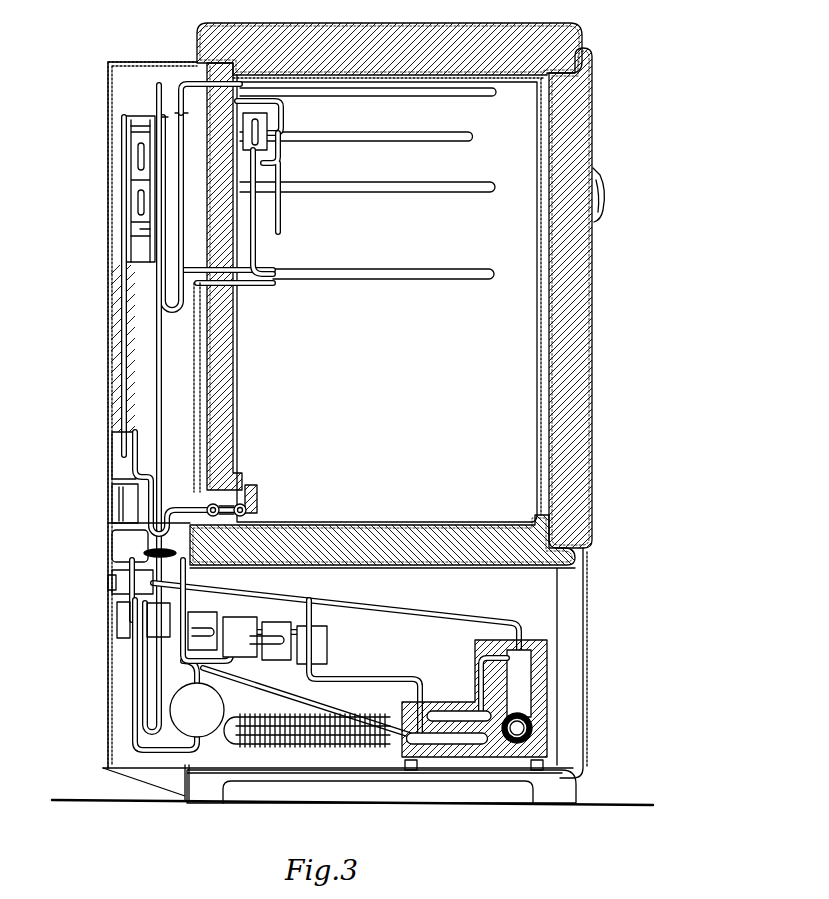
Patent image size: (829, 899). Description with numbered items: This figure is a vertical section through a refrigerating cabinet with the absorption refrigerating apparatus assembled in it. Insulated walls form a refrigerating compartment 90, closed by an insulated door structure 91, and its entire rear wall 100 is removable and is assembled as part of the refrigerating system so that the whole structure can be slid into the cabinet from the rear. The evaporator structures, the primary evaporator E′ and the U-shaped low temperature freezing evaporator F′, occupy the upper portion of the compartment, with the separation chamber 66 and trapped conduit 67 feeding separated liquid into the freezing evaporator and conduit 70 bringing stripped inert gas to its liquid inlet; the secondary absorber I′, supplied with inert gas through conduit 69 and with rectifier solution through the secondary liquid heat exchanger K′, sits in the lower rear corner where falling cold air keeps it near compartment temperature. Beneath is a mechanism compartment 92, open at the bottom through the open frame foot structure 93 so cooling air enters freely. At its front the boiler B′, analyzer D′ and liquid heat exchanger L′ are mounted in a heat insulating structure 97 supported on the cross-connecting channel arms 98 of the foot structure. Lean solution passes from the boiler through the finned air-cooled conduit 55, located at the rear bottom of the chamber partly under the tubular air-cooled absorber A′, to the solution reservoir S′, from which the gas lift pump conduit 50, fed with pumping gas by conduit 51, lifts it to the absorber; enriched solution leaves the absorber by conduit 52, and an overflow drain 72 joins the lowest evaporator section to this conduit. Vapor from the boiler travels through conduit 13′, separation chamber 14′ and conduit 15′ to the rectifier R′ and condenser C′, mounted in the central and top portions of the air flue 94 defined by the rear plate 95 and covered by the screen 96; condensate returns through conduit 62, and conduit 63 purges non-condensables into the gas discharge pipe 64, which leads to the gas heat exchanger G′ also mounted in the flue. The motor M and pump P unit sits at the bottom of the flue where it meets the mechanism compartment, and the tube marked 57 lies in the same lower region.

The screen 96 is at (141, 62).
The gas discharge pipe 64 is at (185, 80).
The conduit 63 is at (166, 115).
The condenser C′ is at (134, 117).
The conduit 70 is at (277, 104).
The separation chamber 66 is at (268, 118).
The trapped conduit 67 is at (282, 158).
The low temperature freezing evaporator F′ is at (386, 132).
The conduit 62 is at (161, 262).
The primary evaporator E′ is at (392, 269).
The overflow drain 72 is at (277, 285).
The rectifier R′ is at (142, 330).
The conduit 69 is at (201, 355).
The refrigerating compartment 90 is at (388, 302).
The insulated door structure 91 is at (570, 298).
The air flue 94 is at (125, 403).
The gas heat exchanger G′ is at (166, 408).
The rear wall 100 is at (234, 411).
The rear plate 95 is at (111, 415).
The conduit 15′ is at (127, 416).
The separation chamber 14′ is at (132, 466).
The conduit 13′ is at (118, 498).
The secondary air-cooled absorber I′ is at (257, 495).
The secondary liquid heat exchanger K′ is at (247, 507).
The inert gas circulating pump P is at (114, 547).
The electrical motor M is at (114, 584).
The mechanism compartment 92 is at (382, 557).
The tubular air-cooled absorber A′ is at (323, 647).
The gas lift pump conduit 50 is at (133, 706).
The tube 57 is at (160, 677).
The conduit 52 is at (367, 679).
The heat insulating structure 97 is at (476, 667).
The liquid heat exchanger L′ is at (451, 710).
The analyzer D′ is at (506, 683).
The conduit 51 is at (157, 736).
The solution reservoir S′ is at (197, 710).
The finned air-cooled conduit 55 is at (284, 720).
The boiler B′ is at (532, 730).
The cross-connecting channel arms 98 is at (413, 771).
The open frame foot structure 93 is at (339, 784).